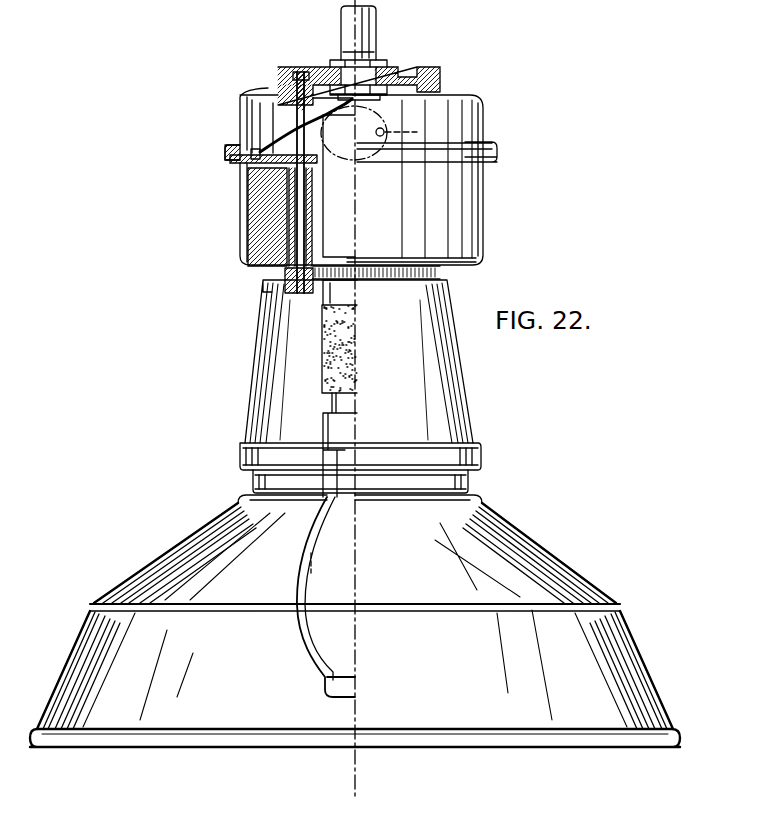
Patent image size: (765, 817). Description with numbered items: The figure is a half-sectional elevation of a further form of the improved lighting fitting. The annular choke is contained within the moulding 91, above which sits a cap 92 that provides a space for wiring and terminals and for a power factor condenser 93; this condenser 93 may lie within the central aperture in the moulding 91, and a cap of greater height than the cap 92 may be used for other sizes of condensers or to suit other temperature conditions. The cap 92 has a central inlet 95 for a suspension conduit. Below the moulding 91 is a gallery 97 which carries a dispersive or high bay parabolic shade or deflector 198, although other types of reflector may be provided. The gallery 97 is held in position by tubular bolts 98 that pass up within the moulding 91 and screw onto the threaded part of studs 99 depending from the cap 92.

The moulding 91 is at (242, 233).
The cap 92 is at (268, 88).
The power factor condenser 93 is at (325, 212).
The central inlet 95 is at (330, 66).
The gallery 97 is at (262, 332).
The tubular bolts 98 is at (312, 250).
The studs 99 is at (303, 137).
The dispersive or high bay parabolic shade or deflector 198 is at (502, 523).